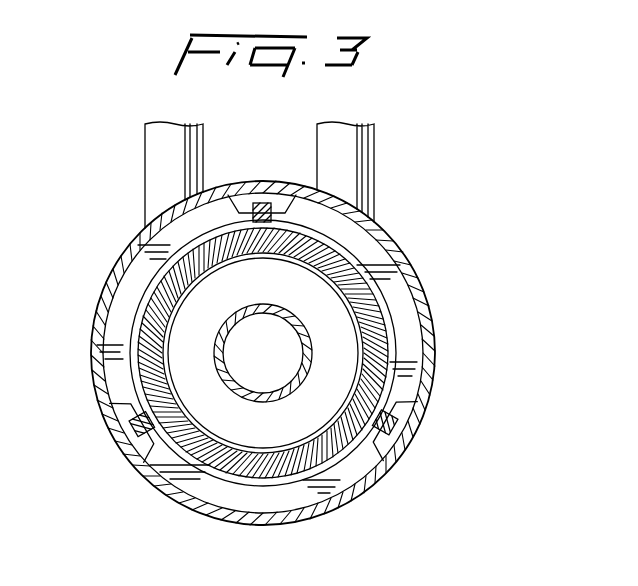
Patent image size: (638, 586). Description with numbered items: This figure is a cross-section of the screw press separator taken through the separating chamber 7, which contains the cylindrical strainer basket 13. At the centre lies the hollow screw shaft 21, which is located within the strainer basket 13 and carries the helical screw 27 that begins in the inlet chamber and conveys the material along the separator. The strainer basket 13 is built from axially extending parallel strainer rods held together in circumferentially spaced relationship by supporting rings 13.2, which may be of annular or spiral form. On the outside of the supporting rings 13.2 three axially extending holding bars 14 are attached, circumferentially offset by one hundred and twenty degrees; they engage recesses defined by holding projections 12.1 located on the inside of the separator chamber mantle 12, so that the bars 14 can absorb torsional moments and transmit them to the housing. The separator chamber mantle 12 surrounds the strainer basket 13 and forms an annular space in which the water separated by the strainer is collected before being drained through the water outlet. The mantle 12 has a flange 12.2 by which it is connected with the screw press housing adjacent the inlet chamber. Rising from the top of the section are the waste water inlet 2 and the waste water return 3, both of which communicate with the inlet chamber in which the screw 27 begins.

The waste water inlet 2 is at (375, 153).
The waste water return 3 is at (145, 153).
The separating chamber 7 is at (340, 358).
The separator chamber mantle 12 is at (340, 508).
The holding projections 12.1 is at (238, 198).
The flange 12.2 is at (408, 388).
The strainer basket 13 is at (191, 424).
The supporting rings 13.2 is at (372, 283).
The holding bars 14 is at (263, 203).
The screw shaft 21 is at (270, 403).
The helical screw 27 is at (209, 322).